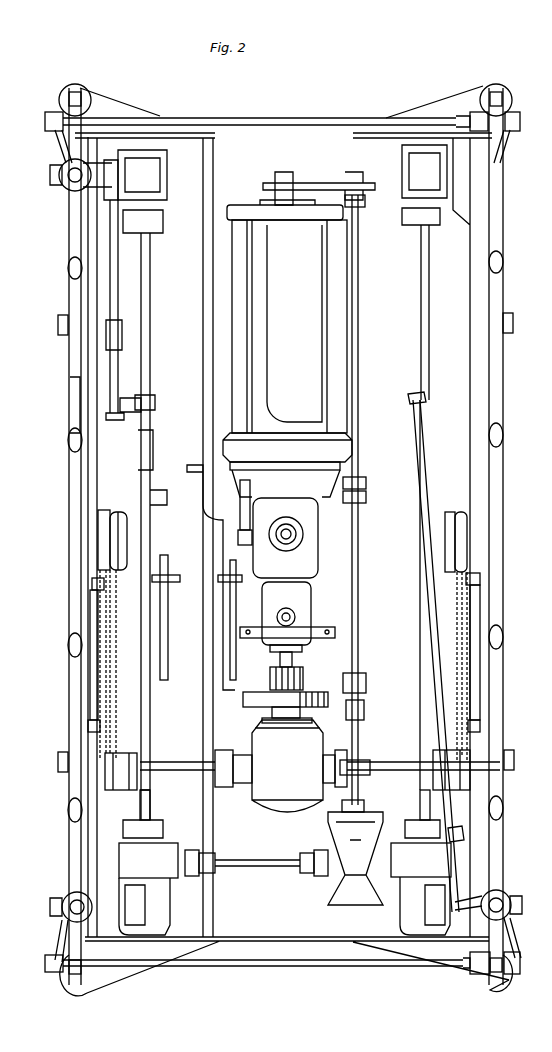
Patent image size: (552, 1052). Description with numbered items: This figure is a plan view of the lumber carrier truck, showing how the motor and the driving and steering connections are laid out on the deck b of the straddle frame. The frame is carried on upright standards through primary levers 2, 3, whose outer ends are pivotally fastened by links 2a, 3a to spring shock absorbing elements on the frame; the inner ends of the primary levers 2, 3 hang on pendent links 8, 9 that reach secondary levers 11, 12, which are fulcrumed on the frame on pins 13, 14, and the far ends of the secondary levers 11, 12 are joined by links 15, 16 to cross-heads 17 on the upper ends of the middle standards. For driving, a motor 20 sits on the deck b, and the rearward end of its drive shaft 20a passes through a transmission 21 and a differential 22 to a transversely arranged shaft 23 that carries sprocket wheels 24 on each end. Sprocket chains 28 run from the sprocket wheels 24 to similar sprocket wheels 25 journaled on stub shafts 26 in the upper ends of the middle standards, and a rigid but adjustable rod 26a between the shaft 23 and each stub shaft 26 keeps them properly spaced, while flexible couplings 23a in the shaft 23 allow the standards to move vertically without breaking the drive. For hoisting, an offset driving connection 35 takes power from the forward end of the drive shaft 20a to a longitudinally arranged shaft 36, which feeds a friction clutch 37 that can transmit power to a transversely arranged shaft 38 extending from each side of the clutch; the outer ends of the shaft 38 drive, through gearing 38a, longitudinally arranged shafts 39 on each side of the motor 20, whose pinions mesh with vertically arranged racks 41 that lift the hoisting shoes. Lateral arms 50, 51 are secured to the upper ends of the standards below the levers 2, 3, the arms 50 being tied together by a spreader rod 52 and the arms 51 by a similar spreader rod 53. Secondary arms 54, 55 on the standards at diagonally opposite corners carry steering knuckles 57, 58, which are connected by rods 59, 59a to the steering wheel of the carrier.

The primary lever 2 is at (66, 883).
The link 2a is at (76, 985).
The primary lever 3 is at (66, 193).
The link 3a is at (75, 92).
The pendent link 8 is at (68, 810).
The pendent link 9 is at (66, 270).
The secondary lever 11 is at (70, 720).
The secondary lever 12 is at (66, 374).
The pin 13 is at (58, 763).
The pin 14 is at (58, 323).
The link 15 is at (68, 645).
The link 16 is at (68, 440).
The cross-head 17 is at (66, 472).
The motor 20 is at (287, 335).
The drive shaft 20a is at (300, 658).
The transmission 21 is at (246, 577).
The differential 22 is at (287, 766).
The transversely arranged shaft 23 is at (180, 772).
The flexible coupling 23a is at (224, 757).
The sprocket wheel 24 is at (118, 756).
The sprocket wheel 25 is at (100, 516).
The stub shaft 26 is at (128, 537).
The adjustable rod 26a is at (92, 614).
The sprocket chain 28 is at (112, 692).
The offset driving connection 35 is at (318, 183).
The longitudinally arranged shaft 36 is at (358, 309).
The friction clutch 37 is at (356, 880).
The transversely arranged shaft 38 is at (270, 870).
The gearing 38a is at (160, 872).
The longitudinally arranged shaft 39 is at (150, 352).
The rack 41 is at (150, 180).
The lateral arm 50 is at (62, 940).
The lateral arm 51 is at (60, 147).
The spreader rod 52 is at (300, 966).
The spreader rod 53 is at (322, 118).
The secondary arm 54 is at (478, 892).
The secondary arm 55 is at (98, 200).
The steering knuckle 57 is at (458, 912).
The steering knuckle 58 is at (110, 200).
The rod 59 is at (458, 838).
The rod 59a is at (112, 340).
The deck b is at (260, 150).